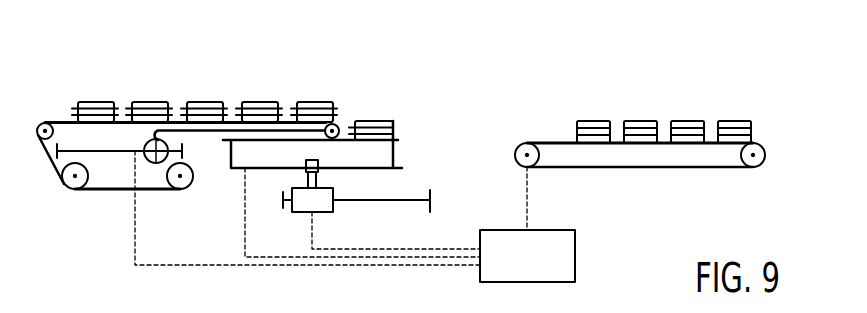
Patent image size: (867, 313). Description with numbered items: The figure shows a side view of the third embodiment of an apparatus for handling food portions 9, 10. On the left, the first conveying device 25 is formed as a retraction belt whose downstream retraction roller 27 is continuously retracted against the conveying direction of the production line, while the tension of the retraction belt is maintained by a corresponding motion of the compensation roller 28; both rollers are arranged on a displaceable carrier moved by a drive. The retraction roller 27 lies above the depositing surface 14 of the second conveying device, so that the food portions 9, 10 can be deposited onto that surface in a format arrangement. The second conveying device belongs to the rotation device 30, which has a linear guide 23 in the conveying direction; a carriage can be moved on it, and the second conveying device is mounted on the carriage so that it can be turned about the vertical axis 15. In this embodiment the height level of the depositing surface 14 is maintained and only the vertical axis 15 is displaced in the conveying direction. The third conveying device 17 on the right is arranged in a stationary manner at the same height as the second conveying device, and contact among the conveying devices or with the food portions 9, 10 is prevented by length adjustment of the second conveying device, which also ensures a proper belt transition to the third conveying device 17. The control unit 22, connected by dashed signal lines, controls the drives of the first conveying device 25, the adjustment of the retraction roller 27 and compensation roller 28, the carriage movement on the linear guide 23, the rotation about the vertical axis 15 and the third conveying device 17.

The food portion 9 is at (96, 102).
The food portion 10 is at (641, 121).
The depositing surface 14 is at (346, 146).
The vertical axis 15 is at (320, 172).
The third conveying device 17 is at (664, 88).
The control unit 22 is at (515, 269).
The linear guide 23 is at (372, 202).
The first conveying device 25 is at (118, 68).
The retraction roller 27 is at (337, 124).
The compensation roller 28 is at (152, 163).
The rotation device 30 is at (398, 96).